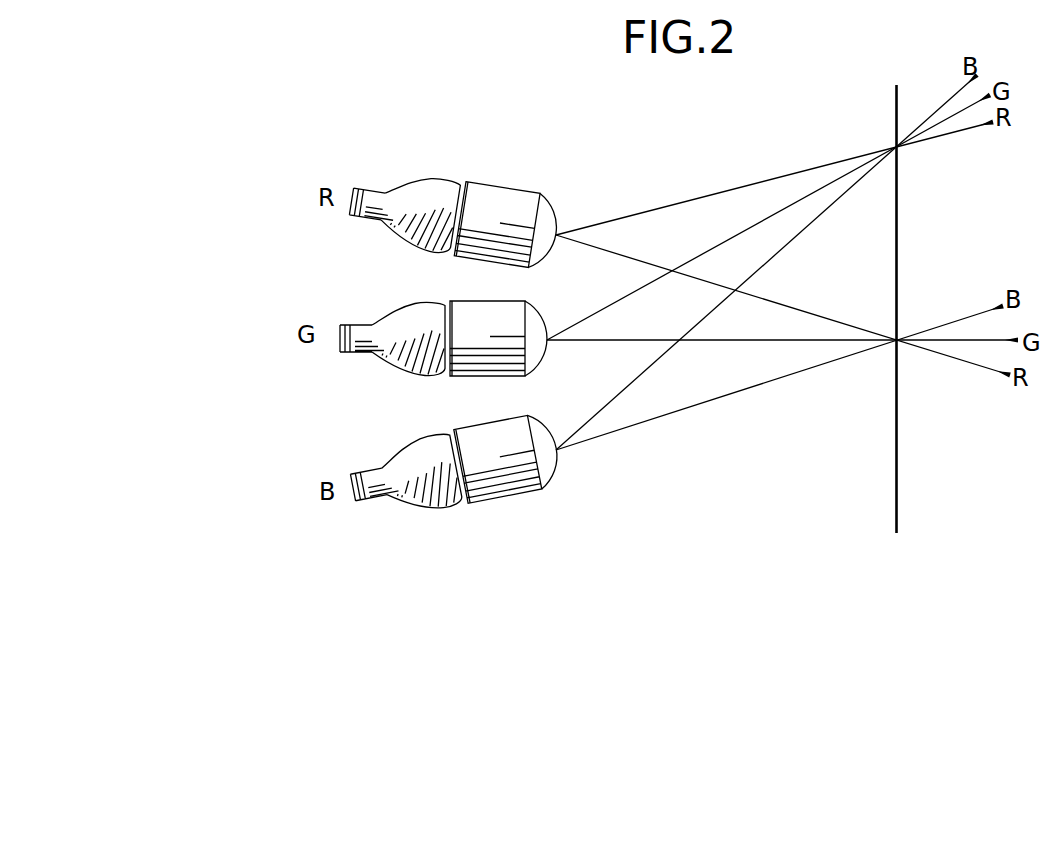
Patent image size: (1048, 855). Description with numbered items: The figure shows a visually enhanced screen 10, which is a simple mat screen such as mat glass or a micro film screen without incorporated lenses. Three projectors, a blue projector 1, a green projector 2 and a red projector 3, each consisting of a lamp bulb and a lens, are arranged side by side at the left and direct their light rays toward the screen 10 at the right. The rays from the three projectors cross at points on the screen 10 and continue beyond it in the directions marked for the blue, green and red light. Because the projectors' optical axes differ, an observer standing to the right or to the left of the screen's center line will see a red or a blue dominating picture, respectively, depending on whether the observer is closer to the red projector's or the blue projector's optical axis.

The blue light source with lens 1 is at (385, 499).
The green light source with lens 2 is at (370, 354).
The red light source with lens 3 is at (366, 222).
The screen 10 is at (893, 478).